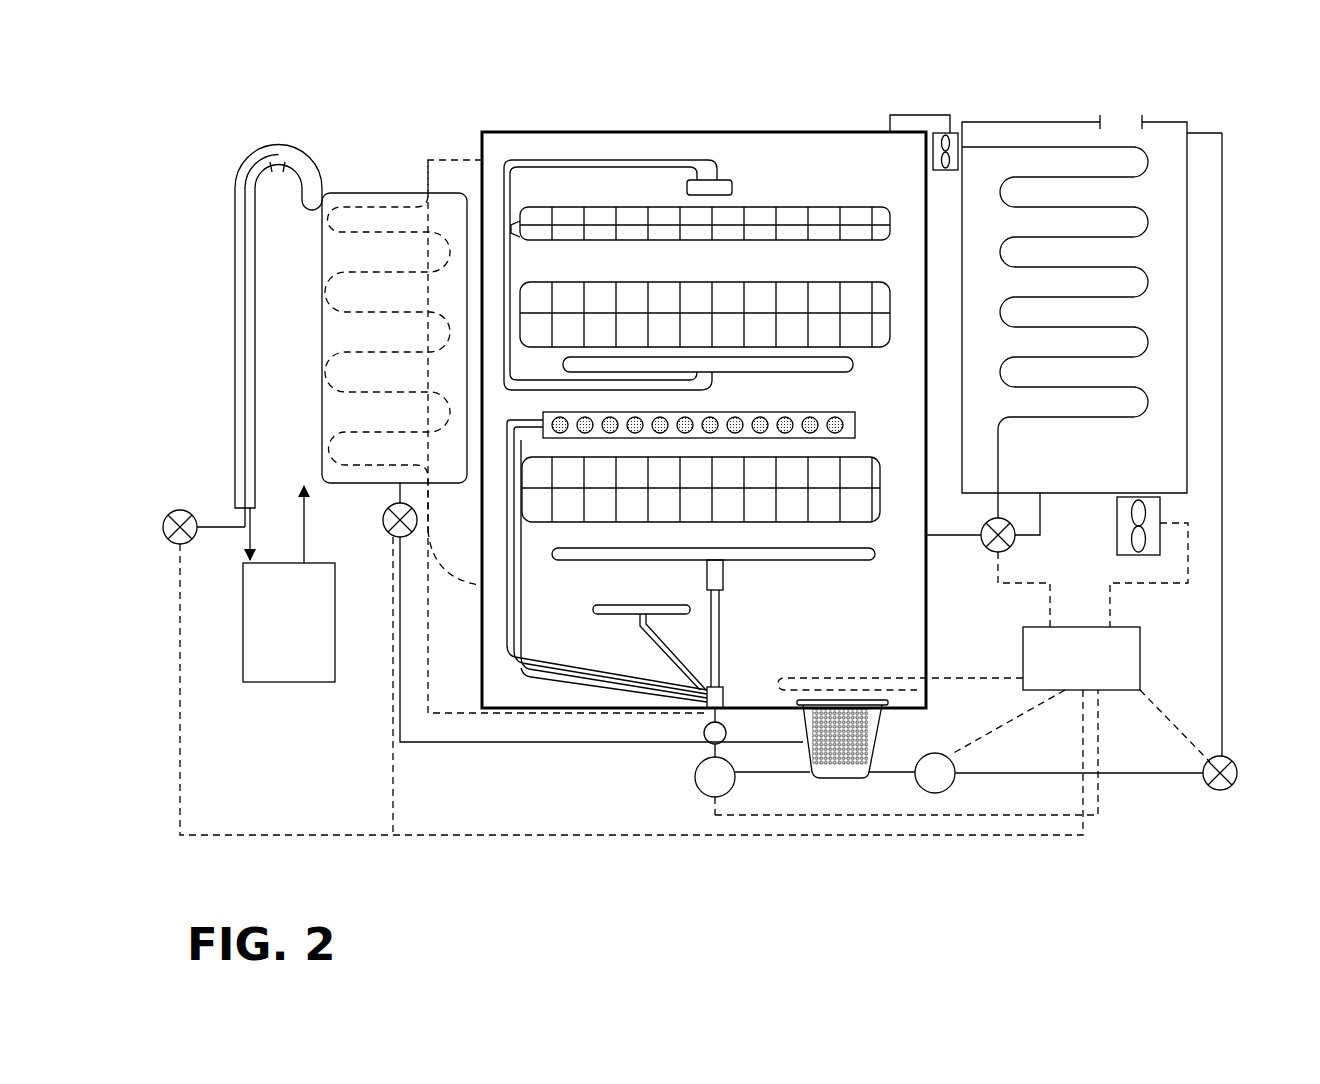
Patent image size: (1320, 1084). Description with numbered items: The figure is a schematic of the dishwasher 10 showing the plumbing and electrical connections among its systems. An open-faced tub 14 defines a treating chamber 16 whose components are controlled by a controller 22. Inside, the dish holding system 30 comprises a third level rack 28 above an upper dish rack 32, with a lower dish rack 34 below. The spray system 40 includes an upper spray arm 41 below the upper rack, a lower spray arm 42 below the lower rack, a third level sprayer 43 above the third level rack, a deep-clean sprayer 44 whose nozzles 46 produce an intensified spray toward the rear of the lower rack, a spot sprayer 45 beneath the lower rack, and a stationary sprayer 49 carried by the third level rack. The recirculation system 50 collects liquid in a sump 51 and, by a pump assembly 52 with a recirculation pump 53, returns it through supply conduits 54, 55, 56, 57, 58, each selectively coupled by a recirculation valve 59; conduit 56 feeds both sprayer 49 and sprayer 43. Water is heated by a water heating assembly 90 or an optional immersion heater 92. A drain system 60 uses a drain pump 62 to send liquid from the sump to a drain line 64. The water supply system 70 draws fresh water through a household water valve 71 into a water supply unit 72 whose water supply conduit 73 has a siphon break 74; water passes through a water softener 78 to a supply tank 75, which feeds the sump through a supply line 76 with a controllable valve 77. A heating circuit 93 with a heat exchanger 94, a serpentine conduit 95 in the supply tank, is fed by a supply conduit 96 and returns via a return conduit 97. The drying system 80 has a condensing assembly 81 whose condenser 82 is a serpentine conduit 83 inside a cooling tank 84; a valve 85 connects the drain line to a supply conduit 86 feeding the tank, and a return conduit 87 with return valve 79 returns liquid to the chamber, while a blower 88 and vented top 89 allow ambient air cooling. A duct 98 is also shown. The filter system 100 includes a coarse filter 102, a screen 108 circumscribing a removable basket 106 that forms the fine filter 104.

The dishwasher 10 is at (1238, 84).
The tub 14 is at (546, 130).
The treating chamber 16 is at (802, 152).
The controller 22 is at (1140, 640).
The third level rack 28 is at (870, 205).
The dish holding system 30 is at (518, 182).
The upper dish rack 32 is at (833, 283).
The lower dish rack 34 is at (525, 540).
The spray system 40 is at (732, 168).
The upper spray arm 41 is at (795, 350).
The lower spray arm 42 is at (865, 560).
The third level sprayer 43 is at (690, 182).
The deep-clean sprayer 44 is at (699, 404).
The spot sprayer 45 is at (630, 615).
The nozzles 46 is at (583, 422).
The sprayer 49 is at (540, 232).
The recirculation system 50 is at (680, 775).
The sump 51 is at (742, 700).
The pump assembly 52 is at (728, 798).
The recirculation pump 53 is at (700, 795).
The supply conduit 54 is at (507, 650).
The supply conduit 55 is at (507, 610).
The supply conduit 56 is at (510, 176).
The supply conduit 57 is at (680, 655).
The supply conduit 58 is at (720, 640).
The recirculation valve 59 is at (700, 718).
The drain system 60 is at (972, 788).
The drain pump 62 is at (935, 796).
The drain line 64 is at (1150, 776).
The water supply system 70 is at (222, 472).
The household water valve 71 is at (163, 527).
The water supply unit 72 is at (297, 125).
The water supply conduit 73 is at (213, 520).
The siphon break 74 is at (243, 172).
The supply tank 75 is at (350, 190).
The supply line 76 is at (400, 585).
The controllable valve 77 is at (383, 520).
The water softener 78 is at (270, 683).
The return valve 79 is at (1017, 542).
The drying system 80 is at (942, 112).
The condensing assembly 81 is at (1018, 118).
The condenser 82 is at (1060, 120).
The serpentine conduit 83 is at (1150, 282).
The cooling tank 84 is at (1192, 312).
The valve 85 is at (1238, 770).
The supply conduit 86 is at (1225, 565).
The return conduit 87 is at (935, 538).
The blower 88 is at (1162, 513).
The vented top 89 is at (1122, 128).
The water heating assembly 90 is at (700, 733).
The heater 92 is at (808, 676).
The heating circuit 93 is at (360, 130).
The heat exchanger 94 is at (400, 190).
The serpentine conduit 95 is at (322, 298).
The supply conduit 96 is at (430, 158).
The return conduit 97 is at (454, 572).
The exhaust duct 98 is at (932, 112).
The filter system 100 is at (873, 783).
The coarse filter 102 is at (800, 705).
The fine filter 104 is at (835, 720).
The removable basket 106 is at (825, 783).
The screen 108 is at (797, 788).